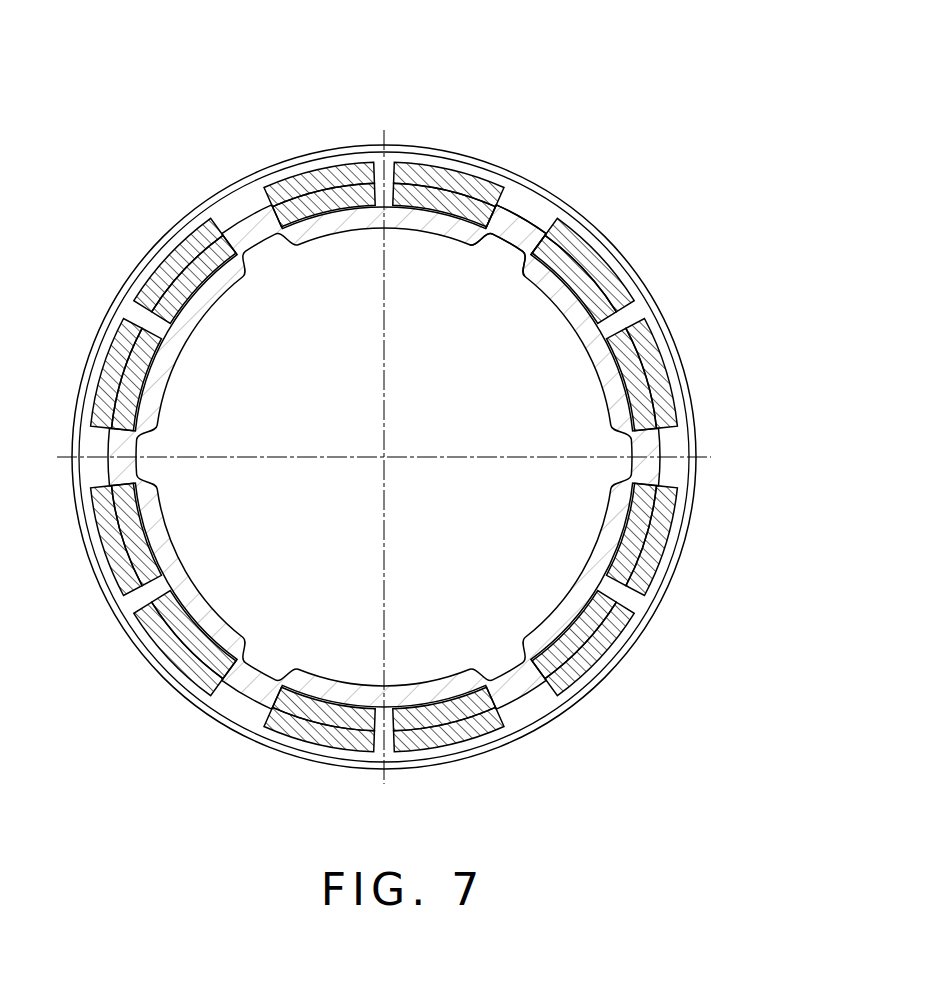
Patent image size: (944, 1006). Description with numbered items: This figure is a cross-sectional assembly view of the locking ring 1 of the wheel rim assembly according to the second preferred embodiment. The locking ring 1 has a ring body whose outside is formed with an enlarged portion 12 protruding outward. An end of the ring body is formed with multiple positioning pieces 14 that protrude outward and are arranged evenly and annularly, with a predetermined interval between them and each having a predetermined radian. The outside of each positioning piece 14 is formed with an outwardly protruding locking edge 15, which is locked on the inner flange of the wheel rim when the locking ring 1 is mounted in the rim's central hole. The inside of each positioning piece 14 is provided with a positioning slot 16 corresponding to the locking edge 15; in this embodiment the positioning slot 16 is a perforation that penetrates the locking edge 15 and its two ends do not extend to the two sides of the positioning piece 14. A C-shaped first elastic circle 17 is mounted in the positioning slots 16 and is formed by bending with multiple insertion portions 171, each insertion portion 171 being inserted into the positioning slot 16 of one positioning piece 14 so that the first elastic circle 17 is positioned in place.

The locking ring 1 is at (266, 67).
The enlarged portion 12 is at (318, 165).
The positioning pieces 14 is at (458, 133).
The locking edge 15 is at (487, 186).
The positioning slot 16 is at (530, 226).
The first elastic circle 17 is at (590, 333).
The insertion portions 171 is at (518, 240).